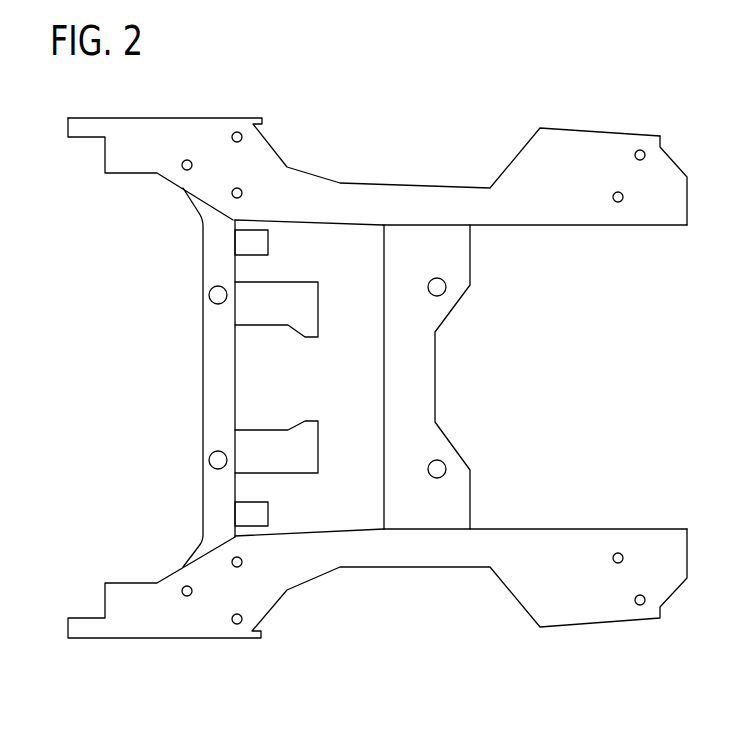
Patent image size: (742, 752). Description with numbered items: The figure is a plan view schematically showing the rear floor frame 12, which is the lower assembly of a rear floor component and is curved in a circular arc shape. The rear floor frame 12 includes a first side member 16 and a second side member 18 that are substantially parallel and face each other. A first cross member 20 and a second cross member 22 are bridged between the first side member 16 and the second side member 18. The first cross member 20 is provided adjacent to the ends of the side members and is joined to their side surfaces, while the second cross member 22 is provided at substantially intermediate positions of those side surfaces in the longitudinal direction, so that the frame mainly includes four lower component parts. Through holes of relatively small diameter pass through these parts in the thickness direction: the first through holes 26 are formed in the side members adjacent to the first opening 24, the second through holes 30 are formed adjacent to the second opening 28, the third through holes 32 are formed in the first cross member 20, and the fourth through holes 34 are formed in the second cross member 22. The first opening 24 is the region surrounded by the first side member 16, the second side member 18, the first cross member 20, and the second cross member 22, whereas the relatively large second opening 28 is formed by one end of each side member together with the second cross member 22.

The rear floor frame 12 is at (672, 78).
The first side member 16 is at (563, 610).
The second side member 18 is at (560, 143).
The first cross member 20 is at (215, 371).
The second cross member 22 is at (425, 383).
The first opening 24 is at (352, 226).
The first through holes 26 is at (235, 188).
The second opening 28 is at (655, 226).
The second through holes 30 is at (618, 192).
The third through holes 32 is at (212, 294).
The fourth through holes 34 is at (438, 289).